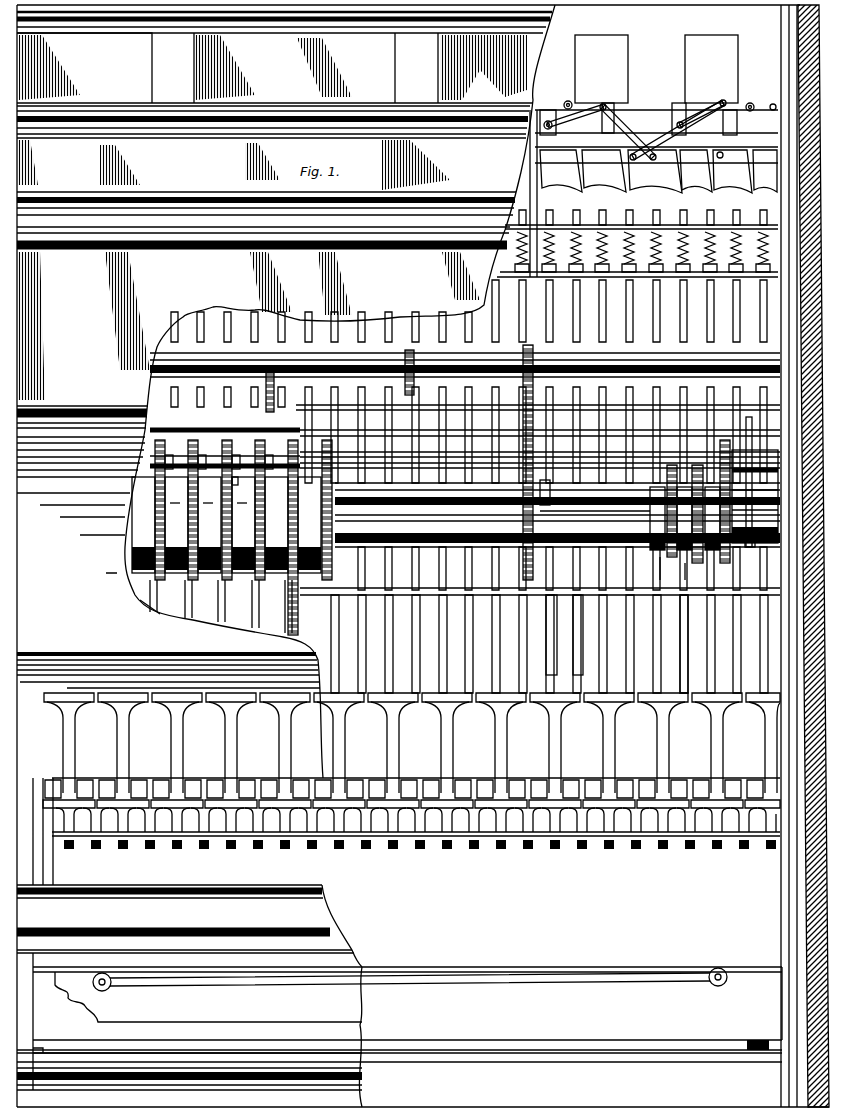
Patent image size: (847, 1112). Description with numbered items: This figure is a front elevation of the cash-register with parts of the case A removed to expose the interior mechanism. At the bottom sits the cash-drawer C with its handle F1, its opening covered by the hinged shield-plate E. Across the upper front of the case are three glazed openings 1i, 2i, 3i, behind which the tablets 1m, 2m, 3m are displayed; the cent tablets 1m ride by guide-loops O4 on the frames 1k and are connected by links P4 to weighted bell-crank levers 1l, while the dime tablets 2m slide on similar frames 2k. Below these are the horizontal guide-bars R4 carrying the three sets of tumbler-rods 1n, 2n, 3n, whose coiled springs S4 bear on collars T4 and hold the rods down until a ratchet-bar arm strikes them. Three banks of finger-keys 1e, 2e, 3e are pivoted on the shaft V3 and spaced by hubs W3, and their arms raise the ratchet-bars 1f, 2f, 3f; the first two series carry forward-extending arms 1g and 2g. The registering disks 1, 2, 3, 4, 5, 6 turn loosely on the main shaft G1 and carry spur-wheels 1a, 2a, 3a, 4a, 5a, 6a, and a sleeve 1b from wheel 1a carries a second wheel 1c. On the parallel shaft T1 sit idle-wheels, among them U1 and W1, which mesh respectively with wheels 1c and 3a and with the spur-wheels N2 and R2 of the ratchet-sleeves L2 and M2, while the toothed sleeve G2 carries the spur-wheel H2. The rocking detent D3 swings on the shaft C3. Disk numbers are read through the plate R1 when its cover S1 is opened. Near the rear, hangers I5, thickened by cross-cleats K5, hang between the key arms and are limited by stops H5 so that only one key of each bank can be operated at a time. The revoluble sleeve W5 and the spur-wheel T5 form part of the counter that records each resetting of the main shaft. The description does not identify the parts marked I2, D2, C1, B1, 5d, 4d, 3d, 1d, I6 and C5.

The cabinet or case A is at (83, 326).
The tablets 3m is at (84, 68).
The rectangular opening 3i is at (177, 68).
The tablets 2m is at (372, 68).
The rectangular opening 2i is at (421, 68).
The rectangular opening 1i is at (654, 153).
The tablets or indicators 1m is at (630, 69).
The links P4 is at (565, 112).
The guide-loops O4 is at (555, 128).
The bell-crank levers 1l is at (650, 171).
The rectangular frames 1k is at (745, 148).
The horizontal guide-bars R4 is at (664, 222).
The springs S4 is at (642, 252).
The tumbler-rods 3n is at (228, 327).
The tumbler-rods 2n is at (388, 327).
The tumbler-rods 1n is at (629, 311).
The shaft C3 is at (464, 355).
The rocking detent D3 is at (478, 387).
The forward-extending arm 1g is at (576, 397).
The forward-extending arm 2g is at (366, 398).
The guide bar I2 is at (667, 406).
The frames 2k is at (540, 460).
The shaft T1 is at (611, 491).
The register bar D2 is at (194, 432).
The spur-wheel R2 is at (226, 410).
The ratchet-sleeve M2 is at (345, 402).
The spur-wheel N2 is at (545, 392).
The cover S1 is at (82, 496).
The sleeve 1b is at (557, 515).
The spur-wheel 1c is at (500, 530).
The stops or studs H5 is at (651, 512).
The spur-wheel U1 is at (536, 469).
The disk 6 is at (133, 575).
The disk 5 is at (197, 575).
The disk 4 is at (229, 575).
The disk 3 is at (256, 575).
The disk 2 is at (283, 573).
The disk 1 is at (326, 572).
The spur-wheel H2 is at (303, 612).
The pawl C1 is at (175, 461).
The pawl B1 is at (208, 461).
The ratchet-sleeve L2 is at (243, 461).
The spur-wheel W1 is at (277, 461).
The plate R1 is at (239, 484).
The wheel digit 5d is at (177, 509).
The wheel digit 4d is at (210, 509).
The wheel digit 3d is at (244, 509).
The spur-wheel 6a is at (160, 596).
The spur-wheel 5a is at (192, 599).
The spur-wheel 4a is at (219, 601).
The spur-wheel 3a is at (248, 604).
The spur-wheel 2a is at (279, 606).
The ratchet-bars 3f is at (172, 608).
The spur-wheel 1a is at (356, 570).
The ratchet-bars 2f is at (506, 643).
The main shaft G1 is at (493, 589).
The units rods 1d is at (557, 637).
The ratchet-bars 1f is at (600, 635).
The sleeve G2 is at (710, 644).
The hangers I5 is at (663, 504).
The shaft V3 is at (692, 478).
The spur-wheel T5 is at (718, 509).
The counter rod I6 is at (669, 568).
The counter rod C5 is at (696, 572).
The revoluble sleeve W5 is at (755, 496).
The collars T4 is at (749, 434).
The cross-cleats K5 is at (750, 550).
The finger-keys 3e is at (177, 778).
The finger-keys 2e is at (447, 779).
The finger-keys 1e is at (681, 779).
The hubs or sleeves W3 is at (540, 848).
The cash-drawer C is at (399, 1046).
The shield-plate E is at (188, 1032).
The handle F1 is at (473, 983).